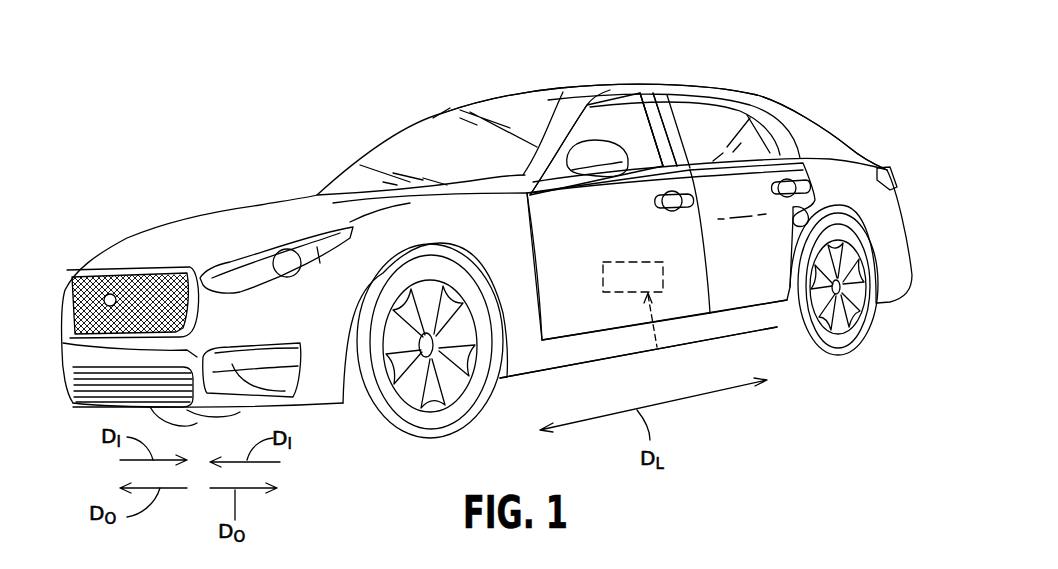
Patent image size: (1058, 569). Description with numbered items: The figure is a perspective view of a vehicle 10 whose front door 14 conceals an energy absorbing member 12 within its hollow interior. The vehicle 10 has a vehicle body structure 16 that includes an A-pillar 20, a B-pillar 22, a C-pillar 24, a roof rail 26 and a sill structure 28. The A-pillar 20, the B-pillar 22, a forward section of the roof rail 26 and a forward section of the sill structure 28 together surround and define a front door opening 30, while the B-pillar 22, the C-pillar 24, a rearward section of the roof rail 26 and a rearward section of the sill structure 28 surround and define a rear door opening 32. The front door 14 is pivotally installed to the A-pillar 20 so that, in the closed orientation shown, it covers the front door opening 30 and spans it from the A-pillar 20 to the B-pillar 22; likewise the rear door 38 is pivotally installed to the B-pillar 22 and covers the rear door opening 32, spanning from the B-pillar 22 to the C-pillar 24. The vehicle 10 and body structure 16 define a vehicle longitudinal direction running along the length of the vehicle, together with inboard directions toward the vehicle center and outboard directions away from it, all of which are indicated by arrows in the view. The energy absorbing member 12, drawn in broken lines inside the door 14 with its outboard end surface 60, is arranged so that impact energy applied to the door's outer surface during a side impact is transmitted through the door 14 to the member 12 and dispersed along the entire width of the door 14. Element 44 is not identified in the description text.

The vehicle 10 is at (798, 42).
The energy absorbing member 12 is at (658, 340).
The door 14 is at (558, 320).
The vehicle body structure 16 is at (617, 78).
The A-pillar 20 is at (563, 118).
The B-pillar 22 is at (670, 113).
The C-pillar 24 is at (787, 113).
The roof rail 26 is at (640, 98).
The sill structure 28 is at (690, 327).
The front door opening 30 is at (532, 246).
The rear door opening 32 is at (813, 198).
The rear door 38 is at (745, 297).
The front door 44 is at (595, 310).
The outboard end surface 60 is at (628, 280).